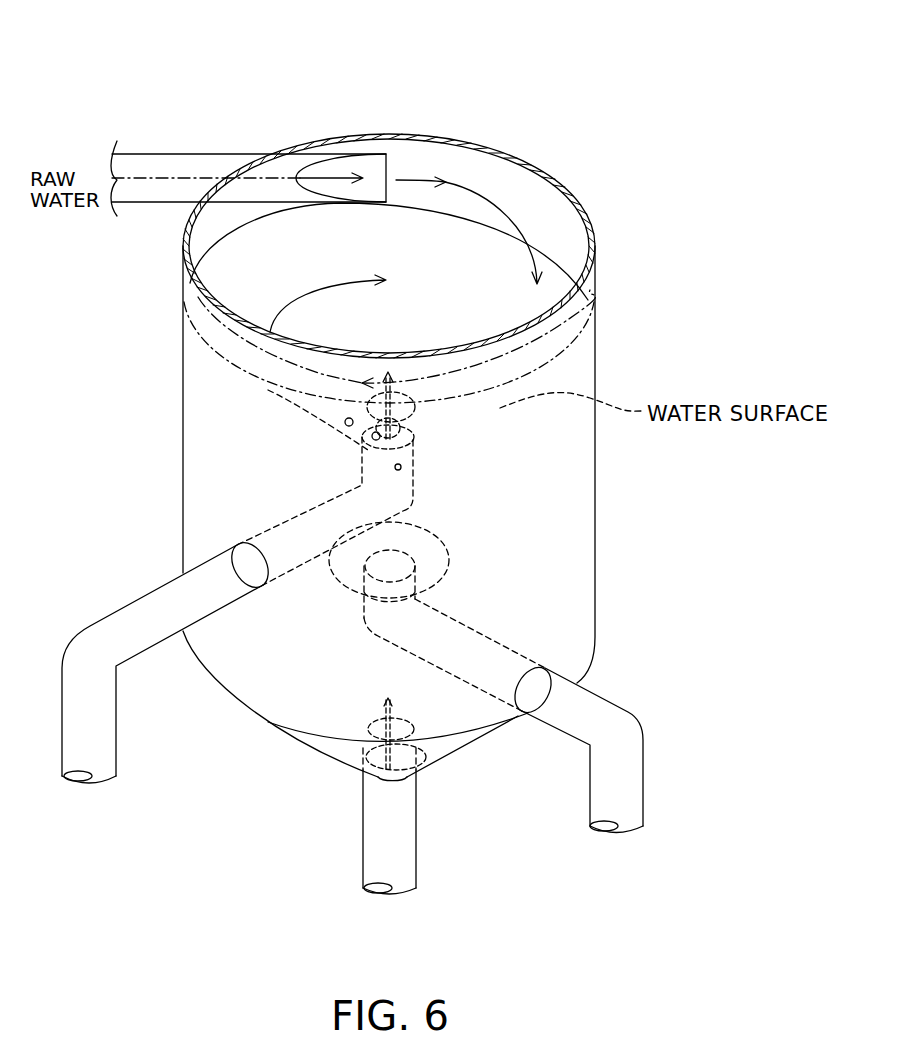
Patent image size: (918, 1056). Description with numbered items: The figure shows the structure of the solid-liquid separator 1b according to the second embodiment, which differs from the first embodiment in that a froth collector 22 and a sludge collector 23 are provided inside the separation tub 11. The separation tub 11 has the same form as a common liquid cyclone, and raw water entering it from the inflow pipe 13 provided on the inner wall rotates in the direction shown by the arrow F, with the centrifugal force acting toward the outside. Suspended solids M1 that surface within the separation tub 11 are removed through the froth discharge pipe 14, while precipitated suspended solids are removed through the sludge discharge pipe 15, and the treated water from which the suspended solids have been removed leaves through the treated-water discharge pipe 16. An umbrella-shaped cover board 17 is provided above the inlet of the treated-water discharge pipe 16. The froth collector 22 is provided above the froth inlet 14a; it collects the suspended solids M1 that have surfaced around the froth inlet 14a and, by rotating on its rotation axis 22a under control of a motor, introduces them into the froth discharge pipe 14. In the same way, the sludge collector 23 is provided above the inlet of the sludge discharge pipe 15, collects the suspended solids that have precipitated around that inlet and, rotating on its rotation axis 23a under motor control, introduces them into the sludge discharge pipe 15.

The solid-liquid separator 1b is at (587, 99).
The separation tub 11 is at (586, 205).
The inflow pipe 13 is at (181, 153).
The arrow indicating rotation direction F is at (490, 198).
The froth discharge pipe 14 is at (113, 610).
The froth inlet 14a is at (363, 448).
The suspended solids M1 is at (337, 428).
The sludge discharge pipe 15 is at (362, 822).
The treated-water discharge pipe 16 is at (645, 772).
The cover board 17 is at (428, 546).
The froth collector 22 is at (418, 445).
The rotation axis 22a is at (400, 410).
The sludge collector 23 is at (412, 752).
The rotation axis 23a is at (384, 711).